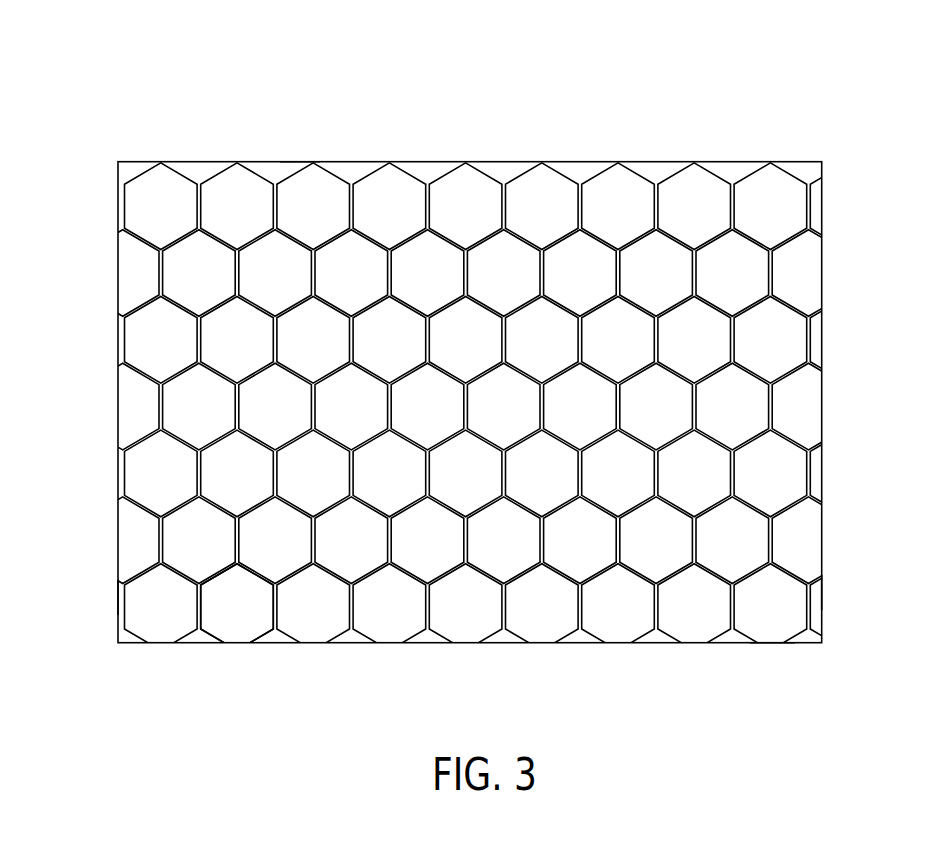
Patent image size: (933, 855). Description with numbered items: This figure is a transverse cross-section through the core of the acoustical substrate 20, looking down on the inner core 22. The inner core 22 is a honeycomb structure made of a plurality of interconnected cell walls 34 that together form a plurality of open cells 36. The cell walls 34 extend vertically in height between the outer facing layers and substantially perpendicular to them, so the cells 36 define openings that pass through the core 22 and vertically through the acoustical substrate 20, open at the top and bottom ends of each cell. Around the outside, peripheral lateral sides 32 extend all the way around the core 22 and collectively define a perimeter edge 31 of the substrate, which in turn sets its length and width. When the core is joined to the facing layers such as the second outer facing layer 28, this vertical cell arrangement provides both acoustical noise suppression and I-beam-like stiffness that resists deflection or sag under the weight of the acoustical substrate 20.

The acoustical substrate 20 is at (79, 77).
The inner core 22 is at (804, 274).
The second outer facing layer 28 is at (320, 612).
The perimeter edge 31 is at (195, 162).
The peripheral lateral sides 32 is at (299, 150).
The cell walls 34 is at (525, 237).
The open cells 36 is at (686, 202).